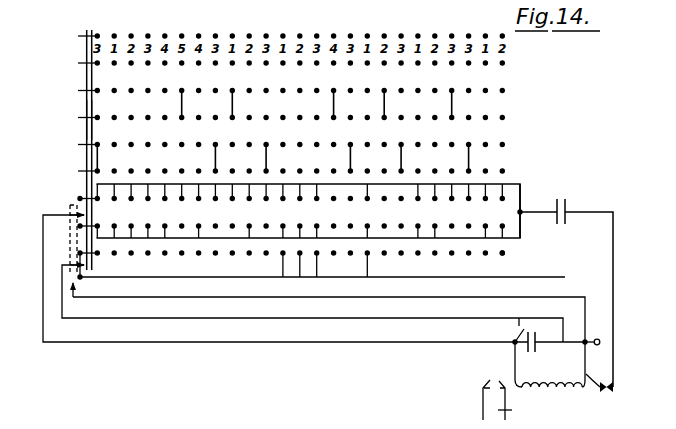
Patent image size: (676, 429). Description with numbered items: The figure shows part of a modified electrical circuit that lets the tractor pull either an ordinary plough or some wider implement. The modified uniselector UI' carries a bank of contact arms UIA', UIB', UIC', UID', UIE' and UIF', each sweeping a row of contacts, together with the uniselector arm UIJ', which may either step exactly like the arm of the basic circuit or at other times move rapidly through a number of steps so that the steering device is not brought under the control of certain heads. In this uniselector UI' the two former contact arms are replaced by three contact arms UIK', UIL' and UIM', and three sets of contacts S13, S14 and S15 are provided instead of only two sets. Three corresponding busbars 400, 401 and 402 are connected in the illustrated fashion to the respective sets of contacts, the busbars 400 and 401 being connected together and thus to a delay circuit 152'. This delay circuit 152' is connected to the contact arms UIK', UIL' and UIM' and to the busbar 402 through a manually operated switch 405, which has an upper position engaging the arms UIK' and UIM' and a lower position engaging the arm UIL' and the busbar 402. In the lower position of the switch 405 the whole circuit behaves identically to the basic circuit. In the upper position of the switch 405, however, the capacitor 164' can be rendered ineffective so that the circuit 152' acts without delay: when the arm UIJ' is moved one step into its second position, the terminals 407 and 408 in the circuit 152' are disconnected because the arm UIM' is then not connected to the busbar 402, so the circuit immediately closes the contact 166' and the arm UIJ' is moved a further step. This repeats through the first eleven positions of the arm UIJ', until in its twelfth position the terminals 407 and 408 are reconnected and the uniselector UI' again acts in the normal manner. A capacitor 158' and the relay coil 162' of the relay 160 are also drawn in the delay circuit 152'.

The contact arm UIA' is at (274, 36).
The contact arm UIB' is at (274, 63).
The contact arm UIC' is at (274, 90).
The contact arm UID' is at (274, 117).
The contact arm UIE' is at (274, 144).
The contact arm UIF' is at (274, 171).
The uniselector arm UIJ' is at (104, 120).
The contact arm UIK' is at (274, 195).
The contact arm UIL' is at (291, 223).
The contact arm UIM' is at (291, 261).
The uniselector UI' is at (499, 105).
The busbar 400 is at (528, 176).
The busbar 401 is at (342, 241).
The busbar 402 is at (409, 277).
The manually operated switch 405 is at (314, 273).
The set of contacts S13 is at (530, 189).
The set of contacts S14 is at (523, 223).
The set of contacts S15 is at (511, 250).
The capacitor 158' is at (566, 284).
The capacitor 164' is at (506, 331).
The terminal 407 is at (550, 338).
The terminal 408 is at (596, 334).
The relay coil 162' is at (548, 364).
The relay 160 is at (584, 367).
The delay circuit 152' is at (465, 400).
The contact 166' is at (520, 401).